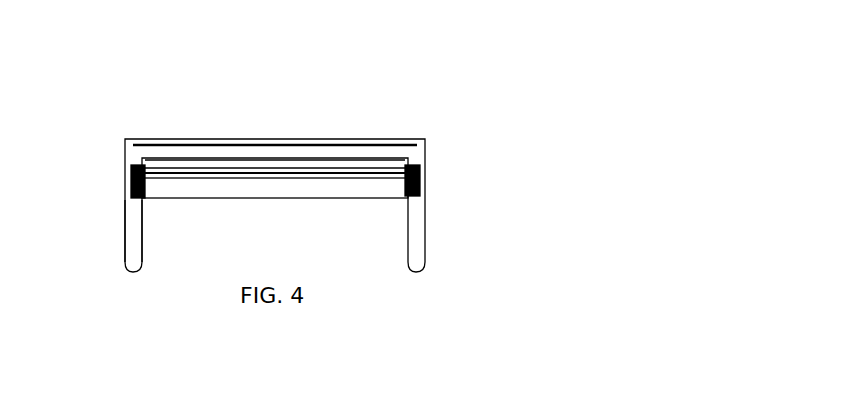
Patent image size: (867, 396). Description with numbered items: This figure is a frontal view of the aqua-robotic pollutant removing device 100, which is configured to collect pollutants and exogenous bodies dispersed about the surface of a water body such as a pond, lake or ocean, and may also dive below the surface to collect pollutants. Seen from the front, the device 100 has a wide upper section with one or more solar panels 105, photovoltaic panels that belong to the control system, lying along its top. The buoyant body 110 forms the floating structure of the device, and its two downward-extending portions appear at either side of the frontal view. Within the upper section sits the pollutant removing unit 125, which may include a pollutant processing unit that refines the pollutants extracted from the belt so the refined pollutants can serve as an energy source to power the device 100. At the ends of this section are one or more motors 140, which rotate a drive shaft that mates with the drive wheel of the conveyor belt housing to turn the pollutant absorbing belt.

The aqua-robotic pollutant removing device 100 is at (634, 72).
The solar panels 105 is at (152, 130).
The buoyant body 110 is at (131, 238).
The pollutant removing unit 125 is at (299, 164).
The motors 140 is at (427, 186).